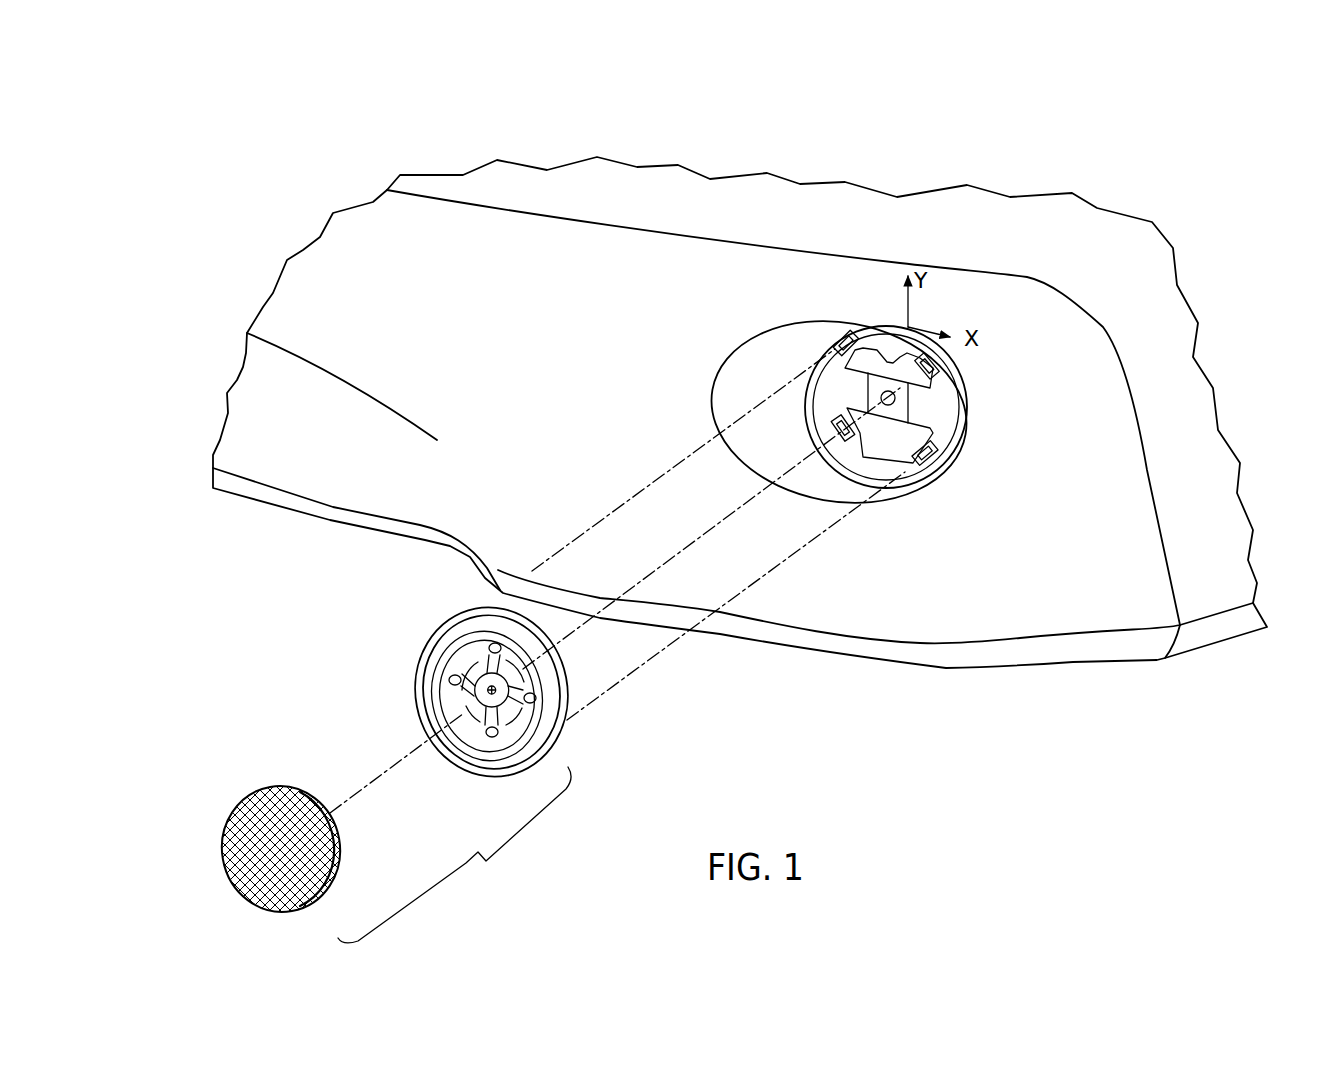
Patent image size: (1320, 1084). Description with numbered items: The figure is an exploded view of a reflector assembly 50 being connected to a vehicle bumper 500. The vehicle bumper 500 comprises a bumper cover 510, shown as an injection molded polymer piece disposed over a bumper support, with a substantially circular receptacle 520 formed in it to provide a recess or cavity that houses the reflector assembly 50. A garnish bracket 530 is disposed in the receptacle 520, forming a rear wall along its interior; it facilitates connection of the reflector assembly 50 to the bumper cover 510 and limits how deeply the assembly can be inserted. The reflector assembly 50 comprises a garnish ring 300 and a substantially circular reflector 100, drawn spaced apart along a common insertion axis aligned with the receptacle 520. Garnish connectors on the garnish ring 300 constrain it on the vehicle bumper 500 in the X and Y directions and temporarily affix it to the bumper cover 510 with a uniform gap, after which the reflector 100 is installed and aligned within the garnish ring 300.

The vehicle bumper 500 is at (740, 386).
The bumper cover 510 is at (1075, 662).
The receptacle 520 is at (745, 362).
The garnish bracket 530 is at (947, 411).
The garnish ring 300 is at (408, 621).
The reflector 100 is at (226, 788).
The reflector assembly 50 is at (454, 855).